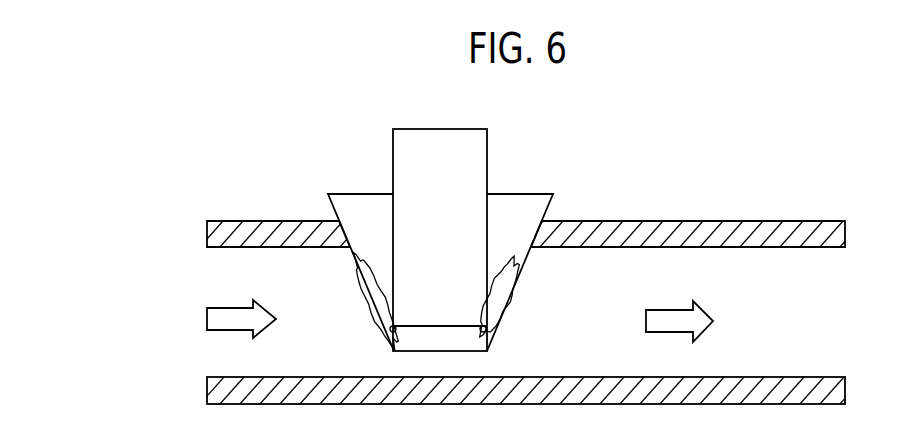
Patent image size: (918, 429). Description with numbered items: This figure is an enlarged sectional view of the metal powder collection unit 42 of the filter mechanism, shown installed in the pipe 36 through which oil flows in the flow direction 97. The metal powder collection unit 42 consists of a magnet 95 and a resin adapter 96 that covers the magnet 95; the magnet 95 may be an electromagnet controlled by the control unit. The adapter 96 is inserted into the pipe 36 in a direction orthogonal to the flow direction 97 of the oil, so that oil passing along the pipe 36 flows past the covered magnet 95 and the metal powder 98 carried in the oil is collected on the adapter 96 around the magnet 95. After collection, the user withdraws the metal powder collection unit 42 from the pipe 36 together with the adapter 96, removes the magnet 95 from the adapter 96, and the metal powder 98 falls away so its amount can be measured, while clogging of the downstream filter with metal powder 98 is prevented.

The pipe 36 is at (767, 220).
The metal powder collection unit 42 is at (582, 164).
The magnet 95 is at (490, 148).
The adapter 96 is at (350, 193).
The flow direction 97 is at (223, 307).
The metal powder 98 is at (360, 300).